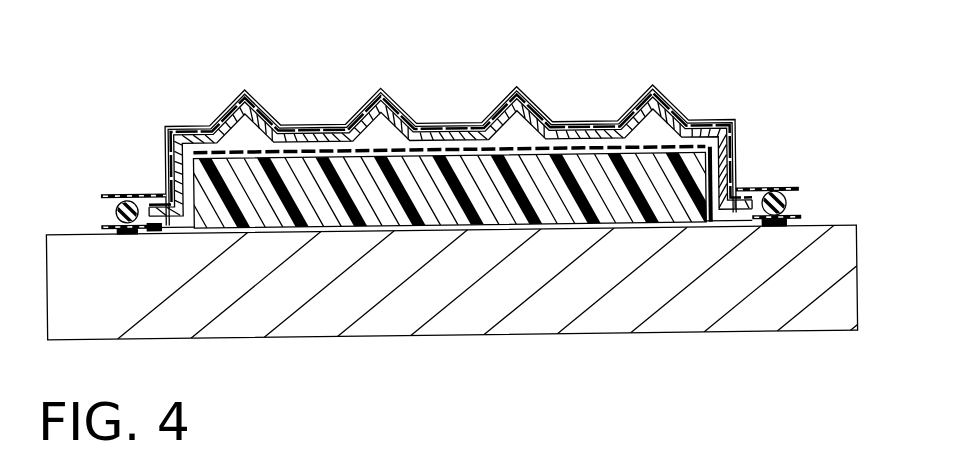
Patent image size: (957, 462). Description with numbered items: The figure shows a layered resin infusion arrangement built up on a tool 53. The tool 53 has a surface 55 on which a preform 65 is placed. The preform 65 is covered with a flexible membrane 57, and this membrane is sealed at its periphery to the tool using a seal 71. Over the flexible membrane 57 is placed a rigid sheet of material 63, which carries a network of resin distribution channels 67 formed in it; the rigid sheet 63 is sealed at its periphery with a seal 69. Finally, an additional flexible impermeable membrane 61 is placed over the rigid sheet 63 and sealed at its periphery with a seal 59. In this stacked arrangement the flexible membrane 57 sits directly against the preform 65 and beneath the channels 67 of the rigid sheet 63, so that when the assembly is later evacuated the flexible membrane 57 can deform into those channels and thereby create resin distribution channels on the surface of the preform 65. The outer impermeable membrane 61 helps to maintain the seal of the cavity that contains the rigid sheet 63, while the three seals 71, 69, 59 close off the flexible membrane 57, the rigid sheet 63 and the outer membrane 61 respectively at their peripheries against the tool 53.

The tool 53 is at (237, 320).
The surface 55 is at (814, 227).
The flexible membrane 57 is at (803, 221).
The seal 59 is at (799, 192).
The additional flexible impermeable membrane 61 is at (742, 136).
The rigid sheet 63 is at (654, 102).
The preform 65 is at (505, 208).
The resin distribution channels 67 is at (519, 131).
The seal 69 is at (173, 225).
The seal 71 is at (132, 230).